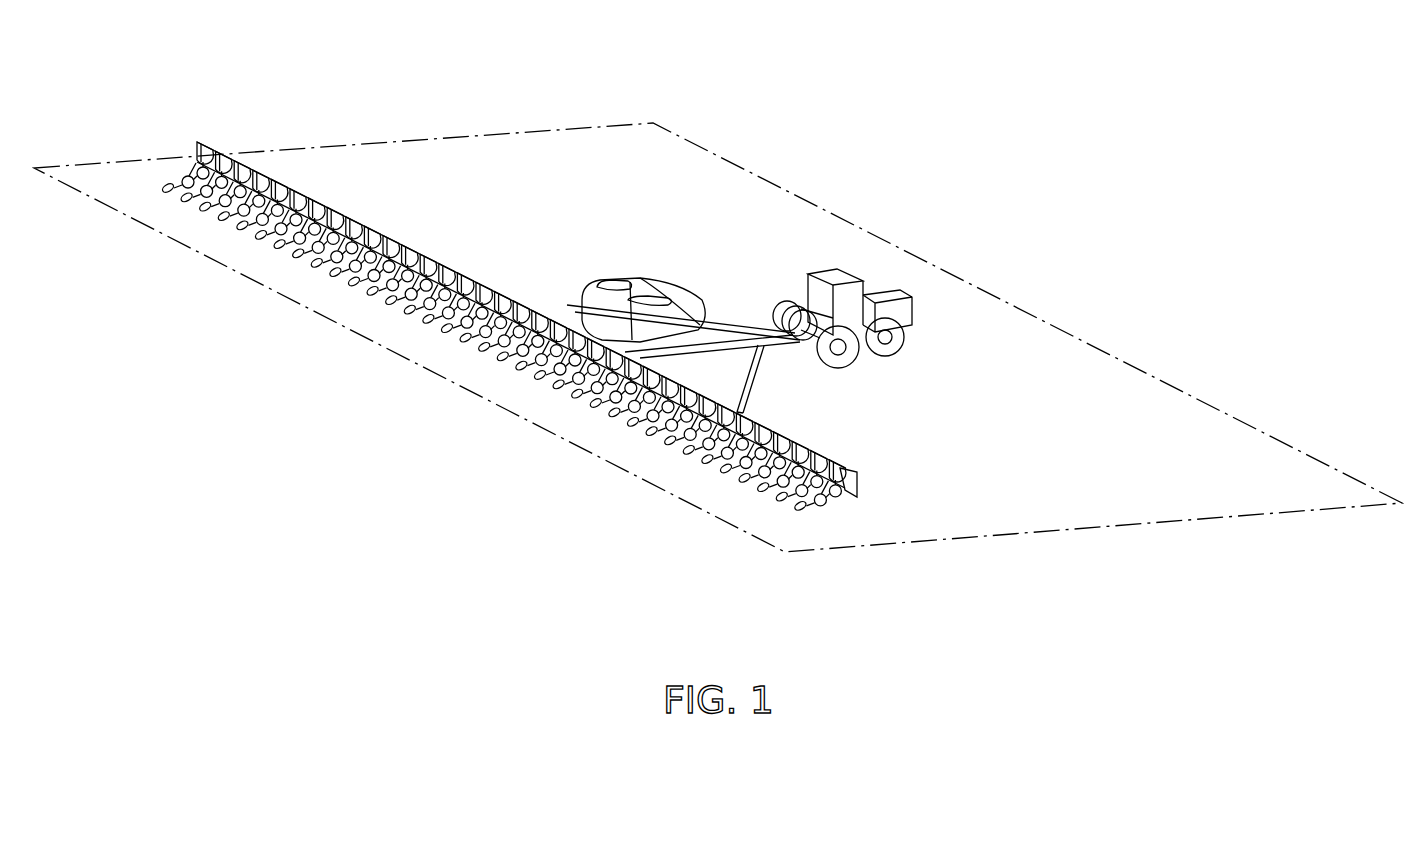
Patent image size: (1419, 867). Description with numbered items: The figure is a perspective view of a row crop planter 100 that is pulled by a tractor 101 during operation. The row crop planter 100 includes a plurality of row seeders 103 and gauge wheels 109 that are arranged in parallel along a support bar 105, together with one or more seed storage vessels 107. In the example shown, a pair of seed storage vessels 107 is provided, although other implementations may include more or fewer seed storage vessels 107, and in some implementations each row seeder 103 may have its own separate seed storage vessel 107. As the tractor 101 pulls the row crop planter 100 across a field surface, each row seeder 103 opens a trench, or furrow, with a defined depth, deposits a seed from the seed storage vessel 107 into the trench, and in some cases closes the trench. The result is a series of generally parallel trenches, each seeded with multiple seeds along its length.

The row crop planter 100 is at (418, 83).
The tractor 101 is at (833, 284).
The row seeder 103 is at (825, 512).
The support bar 105 is at (838, 460).
The seed storage vessel 107 is at (680, 306).
The gauge wheel 109 is at (840, 512).